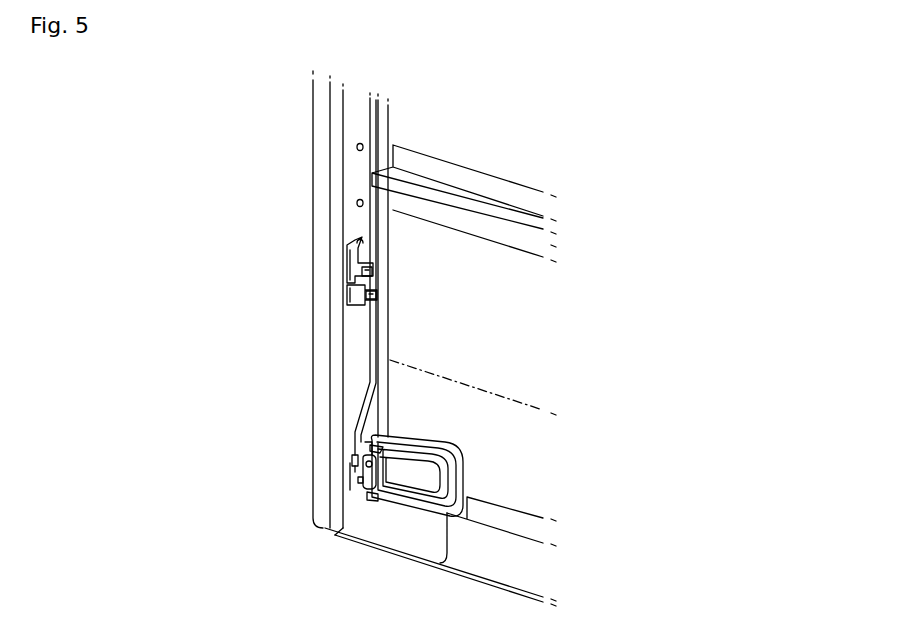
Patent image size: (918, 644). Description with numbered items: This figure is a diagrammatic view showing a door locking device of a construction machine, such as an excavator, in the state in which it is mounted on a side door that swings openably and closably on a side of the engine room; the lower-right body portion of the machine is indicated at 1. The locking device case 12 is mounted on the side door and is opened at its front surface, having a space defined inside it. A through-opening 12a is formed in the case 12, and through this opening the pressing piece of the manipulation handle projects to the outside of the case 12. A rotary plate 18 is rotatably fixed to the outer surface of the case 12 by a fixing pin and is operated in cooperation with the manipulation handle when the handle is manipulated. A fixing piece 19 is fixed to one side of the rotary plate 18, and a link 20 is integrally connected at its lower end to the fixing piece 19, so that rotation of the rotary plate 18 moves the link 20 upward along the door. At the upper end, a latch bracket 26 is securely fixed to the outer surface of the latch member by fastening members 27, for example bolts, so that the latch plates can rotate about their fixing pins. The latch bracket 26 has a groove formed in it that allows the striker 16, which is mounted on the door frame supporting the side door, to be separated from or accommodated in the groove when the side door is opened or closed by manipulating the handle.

The refrigerator body 1 is at (492, 562).
The locking device case 12 is at (400, 490).
The through-opening 12a is at (378, 488).
The striker 16 is at (347, 280).
The rotary plate 18 is at (361, 446).
The fixing piece 19 is at (354, 458).
The link 20 is at (360, 362).
The latch bracket 26 is at (353, 248).
The fastening members 27 is at (373, 272).